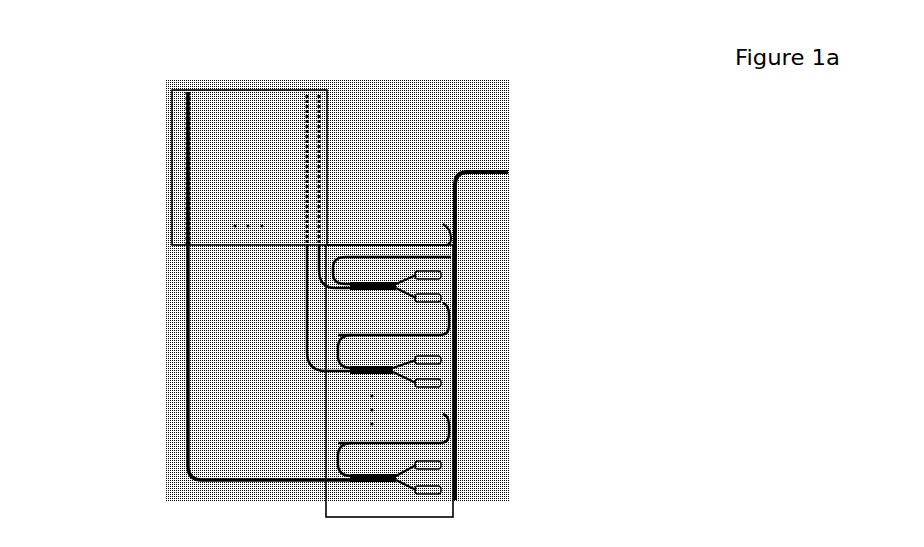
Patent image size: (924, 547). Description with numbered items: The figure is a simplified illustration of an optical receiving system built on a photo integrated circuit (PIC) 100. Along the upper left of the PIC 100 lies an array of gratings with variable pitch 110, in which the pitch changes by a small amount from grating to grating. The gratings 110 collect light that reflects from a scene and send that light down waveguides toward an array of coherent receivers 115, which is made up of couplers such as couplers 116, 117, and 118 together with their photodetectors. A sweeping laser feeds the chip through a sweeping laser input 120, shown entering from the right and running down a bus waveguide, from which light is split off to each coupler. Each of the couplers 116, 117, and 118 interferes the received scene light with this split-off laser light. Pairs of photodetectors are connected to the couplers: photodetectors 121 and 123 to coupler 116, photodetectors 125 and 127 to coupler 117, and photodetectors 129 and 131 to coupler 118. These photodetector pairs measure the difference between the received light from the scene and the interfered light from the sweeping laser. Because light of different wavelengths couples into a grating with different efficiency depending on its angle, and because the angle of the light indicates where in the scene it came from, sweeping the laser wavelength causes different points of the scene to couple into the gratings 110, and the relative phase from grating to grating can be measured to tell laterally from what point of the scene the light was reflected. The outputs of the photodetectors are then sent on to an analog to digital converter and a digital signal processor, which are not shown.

The photo integrated circuit (PIC) 100 is at (389, 395).
The array of gratings with variable pitch 110 is at (347, 82).
The array of coherent receivers 115 is at (318, 378).
The coupler 116 is at (327, 482).
The coupler 117 is at (340, 367).
The coupler 118 is at (323, 280).
The sweeping laser input 120 is at (524, 172).
The photodetector 121 is at (448, 465).
The photodetector 123 is at (448, 490).
The photodetector 125 is at (448, 383).
The photodetector 127 is at (448, 360).
The photodetector 129 is at (448, 298).
The photodetector 131 is at (448, 275).